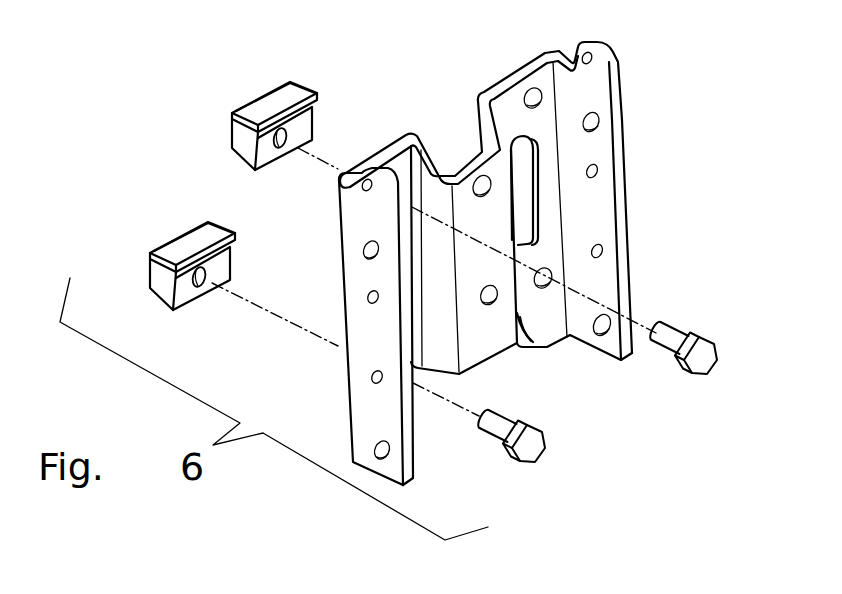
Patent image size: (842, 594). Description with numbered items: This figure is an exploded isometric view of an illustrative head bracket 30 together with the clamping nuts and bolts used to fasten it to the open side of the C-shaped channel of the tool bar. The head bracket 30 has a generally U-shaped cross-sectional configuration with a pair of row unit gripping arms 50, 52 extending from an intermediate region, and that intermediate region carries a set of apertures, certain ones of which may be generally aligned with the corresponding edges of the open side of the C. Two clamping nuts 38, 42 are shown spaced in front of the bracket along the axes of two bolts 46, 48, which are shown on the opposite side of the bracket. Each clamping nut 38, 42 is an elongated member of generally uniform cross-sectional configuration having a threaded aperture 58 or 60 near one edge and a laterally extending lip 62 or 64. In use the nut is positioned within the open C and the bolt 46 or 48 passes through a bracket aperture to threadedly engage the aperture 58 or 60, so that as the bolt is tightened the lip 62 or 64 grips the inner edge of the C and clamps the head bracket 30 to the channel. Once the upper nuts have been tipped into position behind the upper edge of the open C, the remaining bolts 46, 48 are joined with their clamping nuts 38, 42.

The head bracket 30 is at (627, 273).
The clamping nut 38 is at (163, 289).
The clamping nut 42 is at (240, 137).
The bolt 46 is at (533, 450).
The bolt 48 is at (710, 355).
The row unit gripping arm 50 is at (388, 345).
The row unit gripping arm 52 is at (605, 224).
The threaded aperture 58 is at (204, 285).
The threaded aperture 60 is at (283, 146).
The laterally extending lip 62 is at (238, 236).
The laterally extending lip 64 is at (306, 96).